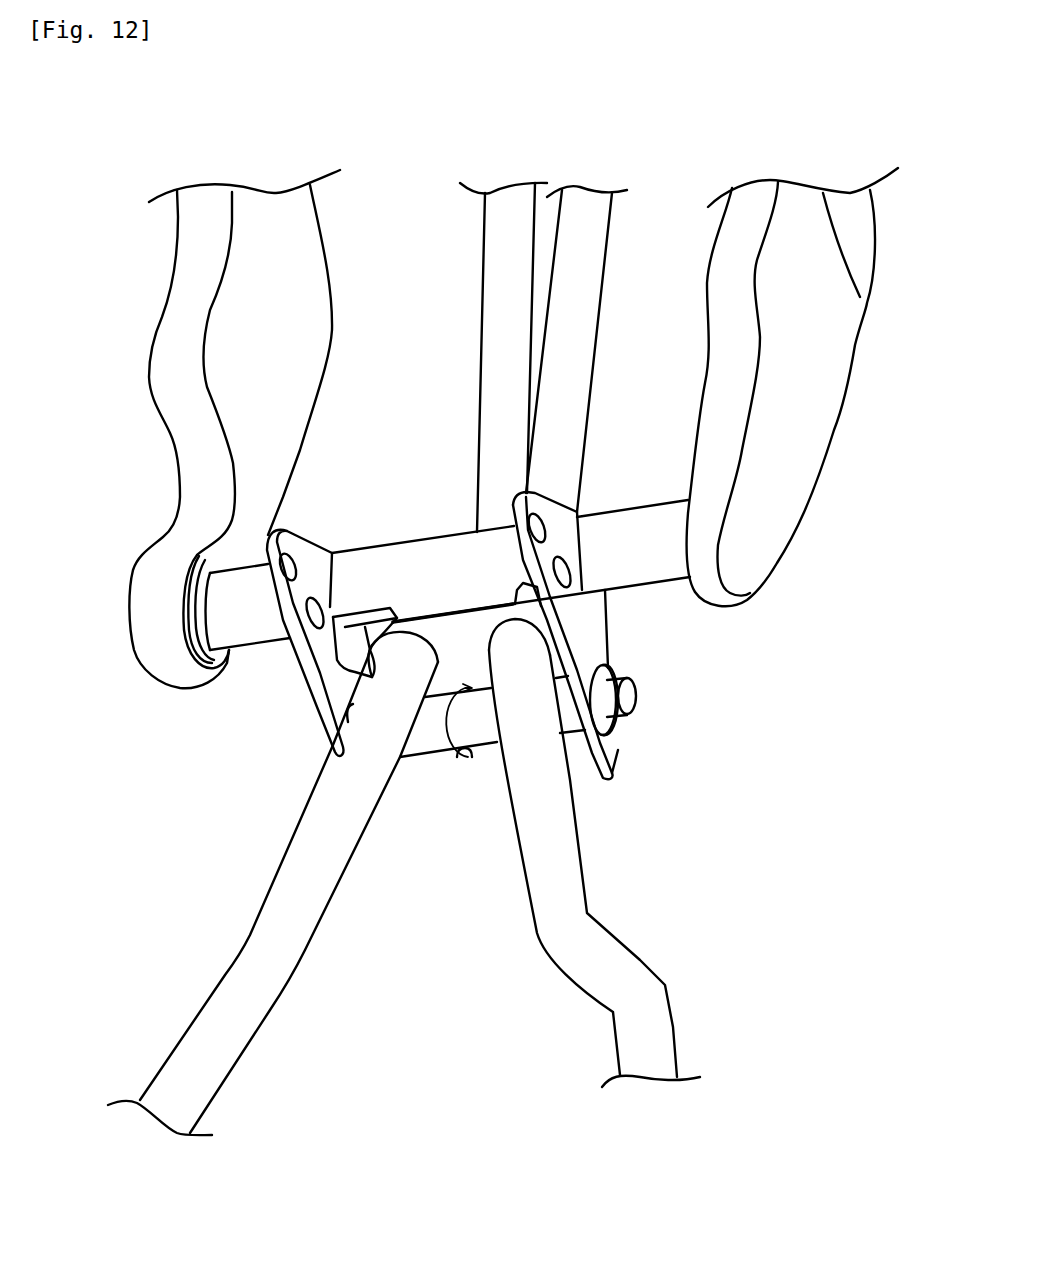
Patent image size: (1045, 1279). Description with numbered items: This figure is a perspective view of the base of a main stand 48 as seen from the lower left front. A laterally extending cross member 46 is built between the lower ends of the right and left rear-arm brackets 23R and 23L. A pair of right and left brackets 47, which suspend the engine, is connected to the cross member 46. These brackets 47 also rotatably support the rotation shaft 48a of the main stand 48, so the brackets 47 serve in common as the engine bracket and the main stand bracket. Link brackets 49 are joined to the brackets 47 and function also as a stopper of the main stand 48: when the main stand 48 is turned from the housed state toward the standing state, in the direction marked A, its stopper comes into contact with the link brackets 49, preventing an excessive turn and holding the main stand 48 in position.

The right rear-arm bracket 23R is at (188, 443).
The left rear-arm bracket 23L is at (832, 380).
The cross member 46 is at (414, 549).
The bracket 47 is at (593, 631).
The main stand 48 is at (450, 632).
The rotation shaft 48a is at (447, 745).
The link bracket 49 is at (358, 628).